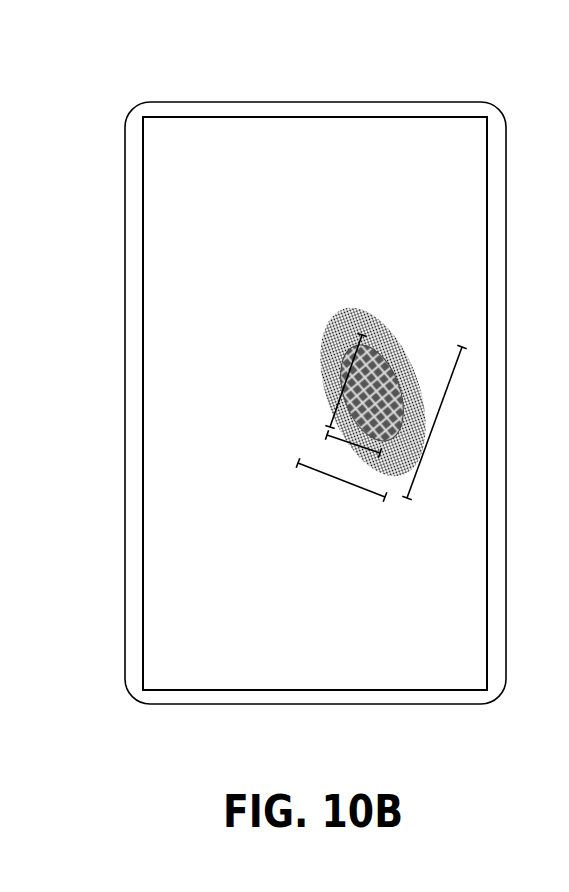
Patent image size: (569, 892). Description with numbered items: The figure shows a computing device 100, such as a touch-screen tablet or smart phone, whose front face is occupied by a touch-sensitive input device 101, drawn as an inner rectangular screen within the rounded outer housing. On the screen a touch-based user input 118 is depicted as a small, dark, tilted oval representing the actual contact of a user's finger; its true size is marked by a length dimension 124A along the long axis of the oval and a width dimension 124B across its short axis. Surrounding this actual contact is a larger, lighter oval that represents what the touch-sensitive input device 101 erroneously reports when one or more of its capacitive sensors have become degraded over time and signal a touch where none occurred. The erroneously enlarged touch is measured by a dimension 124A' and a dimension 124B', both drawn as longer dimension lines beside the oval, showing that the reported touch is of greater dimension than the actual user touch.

The computing device 100 is at (176, 80).
The touch-sensitive input device 101 is at (427, 160).
The touch-based user input 118 is at (380, 368).
The length dimension 124A is at (351, 392).
The width dimension 124B is at (328, 392).
The erroneous length dimension 124A' is at (408, 416).
The erroneous width dimension 124B' is at (355, 487).